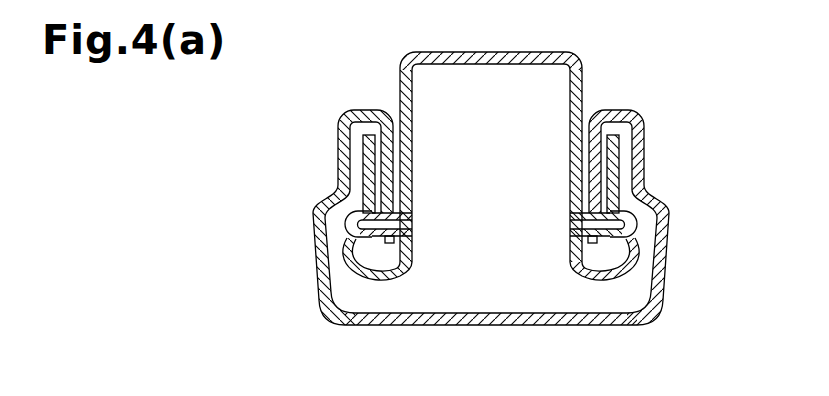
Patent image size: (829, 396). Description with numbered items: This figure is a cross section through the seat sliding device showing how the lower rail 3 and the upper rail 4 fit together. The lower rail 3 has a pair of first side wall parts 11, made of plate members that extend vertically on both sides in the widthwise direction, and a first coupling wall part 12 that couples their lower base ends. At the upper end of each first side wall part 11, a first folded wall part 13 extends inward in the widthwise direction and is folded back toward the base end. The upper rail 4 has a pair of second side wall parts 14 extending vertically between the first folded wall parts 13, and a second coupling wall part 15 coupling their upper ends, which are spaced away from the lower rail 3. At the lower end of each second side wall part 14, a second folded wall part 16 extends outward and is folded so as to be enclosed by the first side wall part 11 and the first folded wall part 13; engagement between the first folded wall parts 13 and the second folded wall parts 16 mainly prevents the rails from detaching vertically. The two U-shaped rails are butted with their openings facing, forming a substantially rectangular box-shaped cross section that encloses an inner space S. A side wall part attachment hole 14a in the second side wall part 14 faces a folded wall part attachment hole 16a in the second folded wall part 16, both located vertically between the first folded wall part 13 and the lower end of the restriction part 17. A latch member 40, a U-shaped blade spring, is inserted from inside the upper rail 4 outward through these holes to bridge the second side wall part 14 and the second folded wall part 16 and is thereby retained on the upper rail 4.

The lower rail 3 is at (496, 241).
The upper rail 4 is at (493, 137).
The first side wall part 11 is at (318, 242).
The first coupling wall part 12 is at (478, 327).
The first folded wall part 13 is at (395, 160).
The second side wall part 14 is at (404, 90).
The side wall part attachment hole 14a is at (412, 216).
The second coupling wall part 15 is at (496, 52).
The second folded wall part 16 is at (350, 165).
The folded wall part attachment hole 16a is at (340, 196).
The restriction part 17 is at (424, 270).
The latch member 40 is at (352, 222).
The inner space S is at (491, 258).